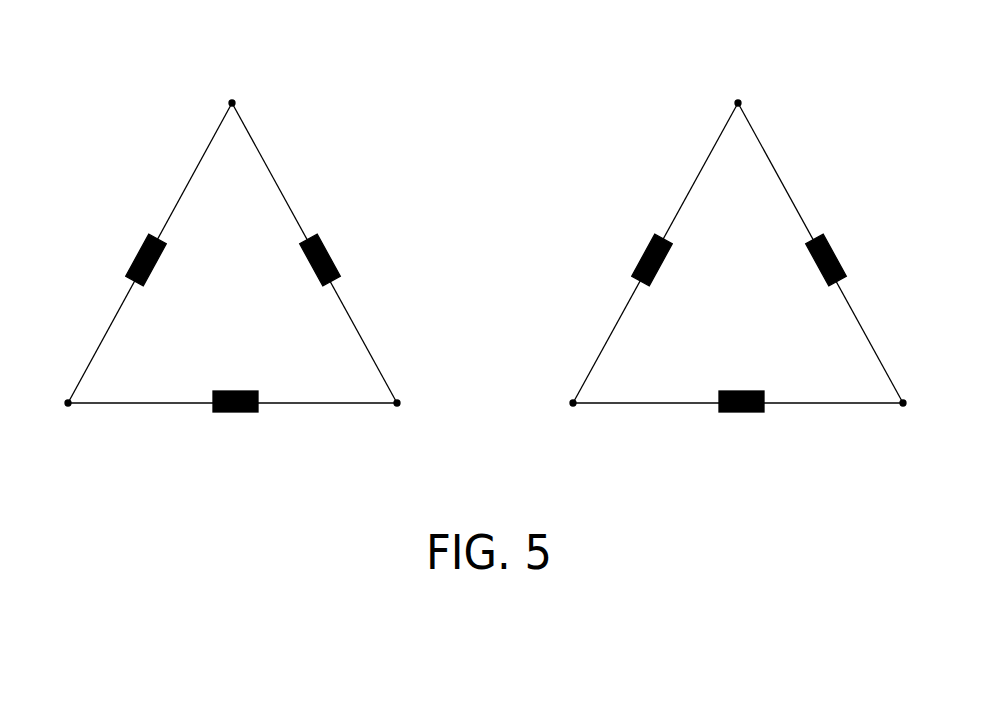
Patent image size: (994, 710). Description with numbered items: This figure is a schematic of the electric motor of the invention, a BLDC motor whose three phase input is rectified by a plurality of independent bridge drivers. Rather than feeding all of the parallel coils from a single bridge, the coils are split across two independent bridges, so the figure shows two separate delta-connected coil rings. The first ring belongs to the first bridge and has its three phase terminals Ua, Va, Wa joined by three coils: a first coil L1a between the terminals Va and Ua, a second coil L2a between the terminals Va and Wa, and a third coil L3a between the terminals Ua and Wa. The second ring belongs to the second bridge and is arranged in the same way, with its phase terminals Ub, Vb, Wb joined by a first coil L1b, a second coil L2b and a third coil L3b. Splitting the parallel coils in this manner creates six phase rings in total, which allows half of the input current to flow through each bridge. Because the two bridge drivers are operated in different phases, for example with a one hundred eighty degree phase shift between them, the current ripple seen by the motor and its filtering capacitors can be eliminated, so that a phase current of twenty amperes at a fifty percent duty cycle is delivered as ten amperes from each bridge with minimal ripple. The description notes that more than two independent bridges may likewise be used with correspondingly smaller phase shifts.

The phase U terminal of first winding set Ua is at (234, 88).
The phase V terminal of first winding set Va is at (49, 404).
The phase W terminal of first winding set Wa is at (418, 406).
The first coil of first delta-connected winding set L1a is at (150, 253).
The second coil of first delta-connected winding set L2a is at (232, 395).
The third coil of first delta-connected winding set L3a is at (314, 253).
The phase U terminal of second winding set Ub is at (740, 88).
The phase V terminal of second winding set Vb is at (554, 404).
The phase W terminal of second winding set Wb is at (924, 406).
The first coil of second delta-connected winding set L1b is at (655, 253).
The second coil of second delta-connected winding set L2b is at (738, 395).
The third coil of second delta-connected winding set L3b is at (820, 253).